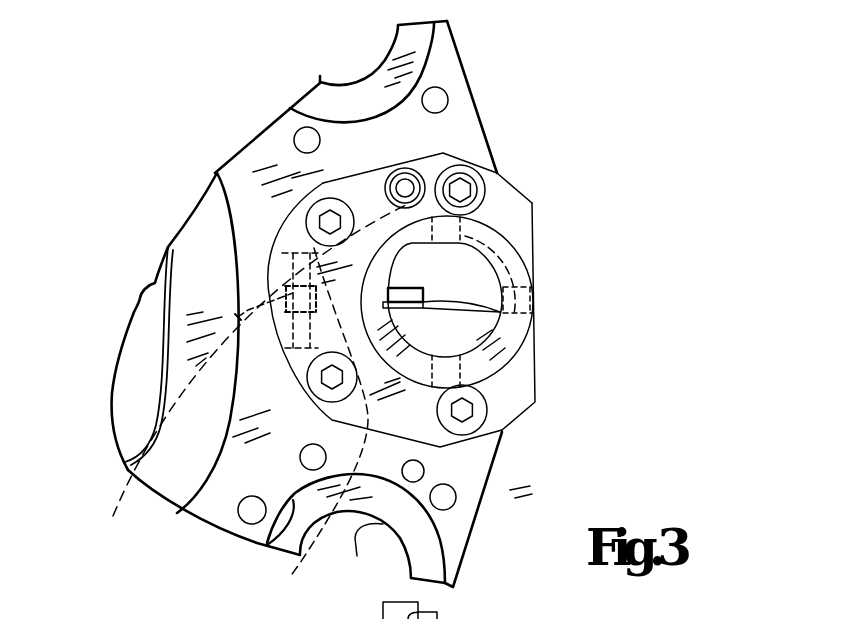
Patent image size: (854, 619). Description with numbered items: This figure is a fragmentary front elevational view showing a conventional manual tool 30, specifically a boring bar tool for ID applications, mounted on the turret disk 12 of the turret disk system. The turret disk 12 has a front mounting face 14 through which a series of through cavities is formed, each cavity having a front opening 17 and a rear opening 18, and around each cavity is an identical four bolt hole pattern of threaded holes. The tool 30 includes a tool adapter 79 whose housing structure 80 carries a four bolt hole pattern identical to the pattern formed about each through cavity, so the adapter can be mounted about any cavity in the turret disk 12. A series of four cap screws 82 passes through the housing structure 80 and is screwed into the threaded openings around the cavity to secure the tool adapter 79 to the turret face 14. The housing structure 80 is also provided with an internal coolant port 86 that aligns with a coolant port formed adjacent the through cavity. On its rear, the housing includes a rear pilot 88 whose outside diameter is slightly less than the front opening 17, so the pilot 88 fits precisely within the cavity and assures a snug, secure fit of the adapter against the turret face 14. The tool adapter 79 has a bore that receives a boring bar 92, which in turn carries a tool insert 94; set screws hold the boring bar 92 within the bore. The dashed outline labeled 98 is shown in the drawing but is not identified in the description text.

The turret disk 12 is at (458, 568).
The front mounting face 14 is at (462, 503).
The front opening 17 is at (293, 500).
The rear opening 18 is at (363, 554).
The conventional manual tool 30 is at (570, 262).
The tool adapter 79 is at (533, 415).
The housing structure 80 is at (500, 400).
The cap screws 82 is at (405, 188).
The internal coolant port 86 is at (332, 220).
The rear pilot 88 is at (296, 568).
The boring bar 92 is at (443, 275).
The tool insert 94 is at (500, 312).
The pitch circle 98 is at (235, 379).